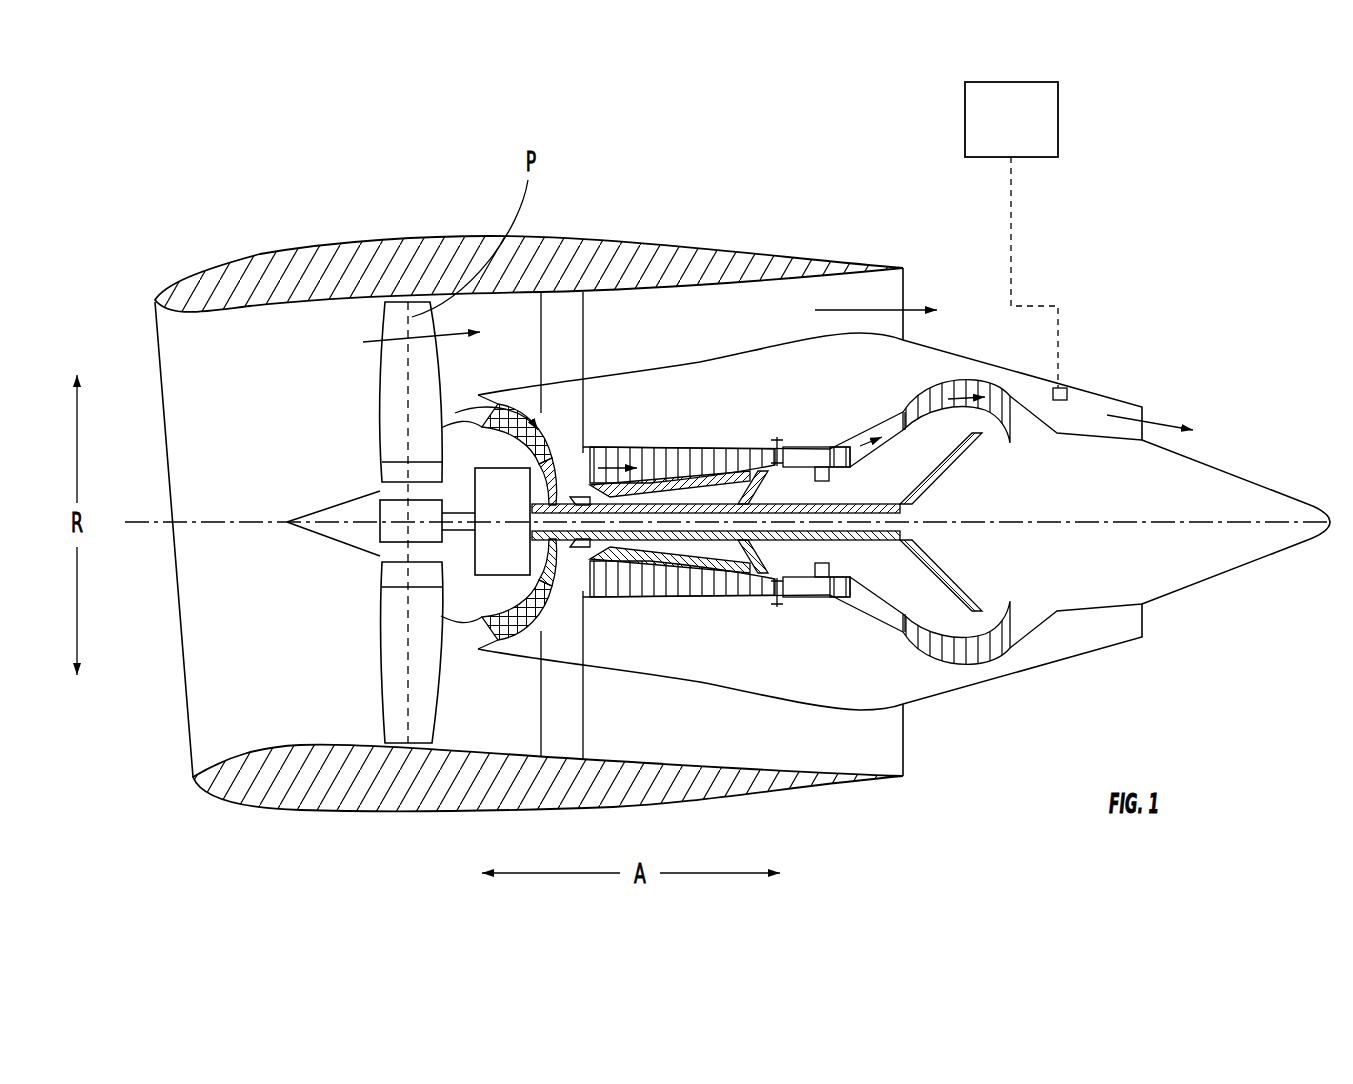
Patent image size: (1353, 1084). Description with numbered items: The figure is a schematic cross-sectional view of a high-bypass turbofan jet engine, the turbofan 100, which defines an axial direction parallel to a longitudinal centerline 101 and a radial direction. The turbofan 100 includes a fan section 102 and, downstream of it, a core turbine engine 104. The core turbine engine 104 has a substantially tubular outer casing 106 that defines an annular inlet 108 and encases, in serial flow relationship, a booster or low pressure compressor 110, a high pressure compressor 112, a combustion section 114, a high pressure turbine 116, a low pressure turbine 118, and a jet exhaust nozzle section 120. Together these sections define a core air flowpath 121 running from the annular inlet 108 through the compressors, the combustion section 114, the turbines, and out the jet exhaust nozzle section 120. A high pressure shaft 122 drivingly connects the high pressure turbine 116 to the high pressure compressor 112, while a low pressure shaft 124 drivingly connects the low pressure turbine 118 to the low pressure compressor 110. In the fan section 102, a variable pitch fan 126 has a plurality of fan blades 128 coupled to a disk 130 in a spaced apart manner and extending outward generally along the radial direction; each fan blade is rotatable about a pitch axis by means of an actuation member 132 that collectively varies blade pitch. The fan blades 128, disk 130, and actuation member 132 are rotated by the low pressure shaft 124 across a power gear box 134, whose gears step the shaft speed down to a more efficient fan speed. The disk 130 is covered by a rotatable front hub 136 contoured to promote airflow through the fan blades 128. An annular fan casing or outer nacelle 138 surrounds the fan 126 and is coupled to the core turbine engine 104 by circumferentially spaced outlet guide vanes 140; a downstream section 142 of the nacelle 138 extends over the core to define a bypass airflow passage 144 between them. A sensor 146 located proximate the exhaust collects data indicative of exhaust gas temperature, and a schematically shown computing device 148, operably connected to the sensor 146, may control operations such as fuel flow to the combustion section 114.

The turbofan 100 is at (1057, 243).
The longitudinal centerline 101 is at (1112, 521).
The fan section 102 is at (337, 316).
The core turbine engine 104 is at (693, 378).
The outer casing 106 is at (753, 698).
The annular inlet 108 is at (493, 633).
The low pressure compressor 110 is at (524, 652).
The high pressure compressor 112 is at (617, 583).
The combustion section 114 is at (792, 600).
The high pressure turbine 116 is at (855, 598).
The low pressure turbine 118 is at (992, 663).
The jet exhaust nozzle section 120 is at (1055, 637).
The core air flowpath 121 is at (569, 600).
The high pressure shaft 122 is at (802, 497).
The low pressure shaft 124 is at (937, 478).
The variable pitch fan 126 is at (345, 570).
The fan blades 128 is at (378, 680).
The disk 130 is at (398, 473).
The actuation member 132 is at (380, 500).
The power gear box 134 is at (567, 470).
The rotatable front hub 136 is at (300, 543).
The outer nacelle 138 is at (432, 810).
The outlet guide vanes 140 is at (583, 318).
The downstream section 142 is at (826, 258).
The bypass airflow passage 144 is at (777, 320).
The sensor 146 is at (1067, 391).
The computing device 148 is at (996, 134).